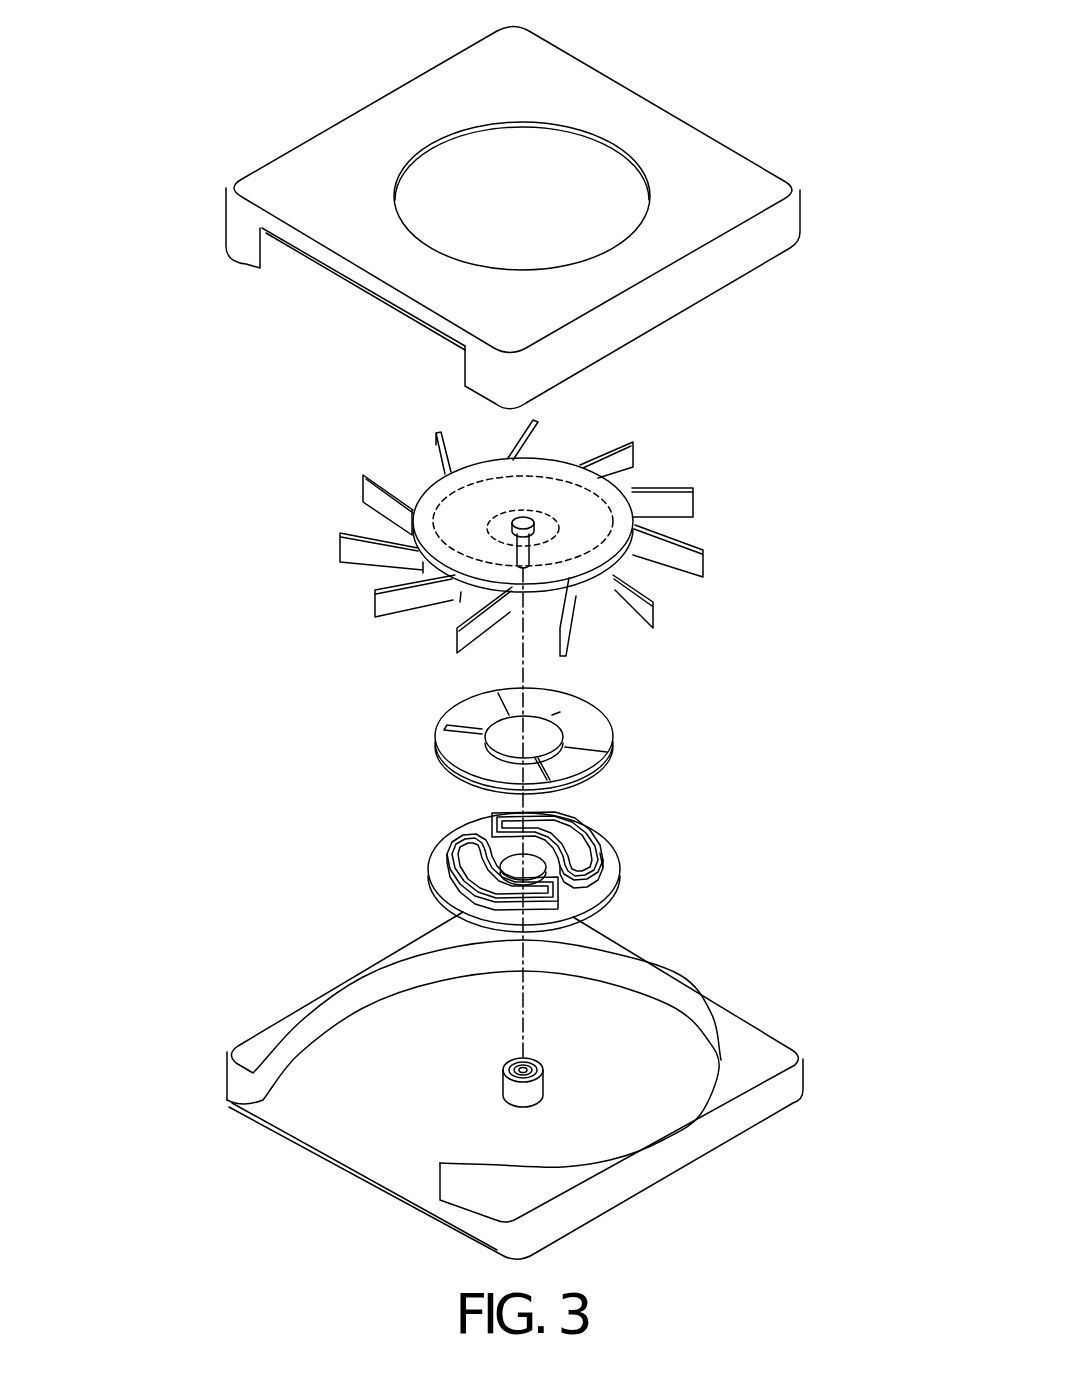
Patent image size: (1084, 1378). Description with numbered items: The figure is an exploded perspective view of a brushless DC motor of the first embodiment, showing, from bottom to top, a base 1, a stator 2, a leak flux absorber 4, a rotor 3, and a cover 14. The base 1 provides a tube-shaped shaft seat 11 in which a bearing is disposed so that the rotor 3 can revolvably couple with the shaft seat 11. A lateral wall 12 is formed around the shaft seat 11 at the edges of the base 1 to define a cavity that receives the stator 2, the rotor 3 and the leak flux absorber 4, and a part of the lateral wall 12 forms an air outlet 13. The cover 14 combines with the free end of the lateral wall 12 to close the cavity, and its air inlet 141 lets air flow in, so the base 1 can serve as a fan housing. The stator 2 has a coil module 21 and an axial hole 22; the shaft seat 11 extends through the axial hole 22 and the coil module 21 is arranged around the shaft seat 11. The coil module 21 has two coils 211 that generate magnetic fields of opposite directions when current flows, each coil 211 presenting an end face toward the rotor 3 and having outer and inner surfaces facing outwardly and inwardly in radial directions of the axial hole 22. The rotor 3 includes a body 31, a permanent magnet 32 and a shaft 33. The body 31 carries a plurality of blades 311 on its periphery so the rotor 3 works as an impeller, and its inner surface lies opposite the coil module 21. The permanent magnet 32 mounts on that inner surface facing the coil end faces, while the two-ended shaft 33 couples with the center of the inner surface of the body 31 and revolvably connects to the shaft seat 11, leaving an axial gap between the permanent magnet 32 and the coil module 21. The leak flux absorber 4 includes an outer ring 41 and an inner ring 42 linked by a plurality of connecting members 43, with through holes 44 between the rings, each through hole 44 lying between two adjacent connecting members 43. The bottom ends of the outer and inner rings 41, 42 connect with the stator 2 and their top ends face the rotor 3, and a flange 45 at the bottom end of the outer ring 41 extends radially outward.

The base 1 is at (497, 1085).
The shaft seat 11 is at (505, 1098).
The lateral wall 12 is at (550, 1188).
The air outlet 13 is at (342, 1144).
The cover 14 is at (513, 215).
The air inlet 141 is at (596, 168).
The stator 2 is at (552, 853).
The coil module 21 is at (602, 863).
The coil 211 is at (593, 855).
The axial hole 22 is at (512, 866).
The rotor 3 is at (536, 519).
The body 31 is at (473, 480).
The blade 311 is at (668, 496).
The permanent magnet 32 is at (582, 508).
The shaft 33 is at (583, 600).
The leak flux absorber 4 is at (539, 727).
The outer ring 41 is at (602, 784).
The inner ring 42 is at (552, 718).
The connecting member 43 is at (583, 760).
The through hole 44 is at (582, 722).
The flange 45 is at (608, 768).